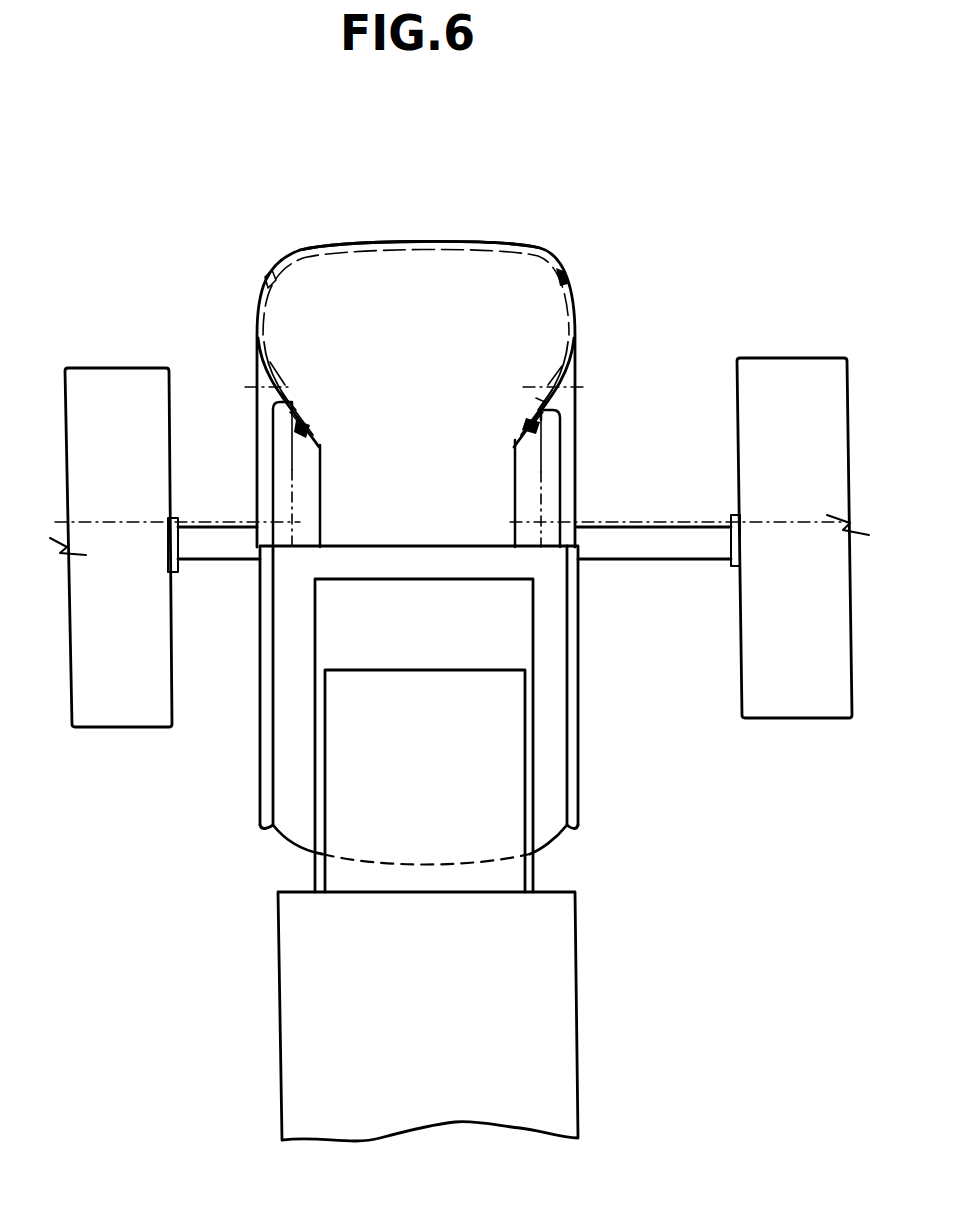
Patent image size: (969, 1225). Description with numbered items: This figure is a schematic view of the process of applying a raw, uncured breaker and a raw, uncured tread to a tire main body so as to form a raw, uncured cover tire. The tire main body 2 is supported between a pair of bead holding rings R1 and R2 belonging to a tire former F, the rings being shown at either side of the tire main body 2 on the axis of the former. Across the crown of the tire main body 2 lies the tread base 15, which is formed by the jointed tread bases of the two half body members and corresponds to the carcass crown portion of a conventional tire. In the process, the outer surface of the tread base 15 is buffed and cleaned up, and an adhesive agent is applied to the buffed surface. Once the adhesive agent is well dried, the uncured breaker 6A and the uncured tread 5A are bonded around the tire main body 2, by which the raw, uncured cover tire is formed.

The tire main body 2 is at (552, 250).
The tread base 15 is at (396, 242).
The bead holding ring R2 is at (290, 462).
The bead holding ring R1 is at (542, 471).
The tire former F is at (776, 340).
The uncured breaker 6A is at (493, 722).
The uncured tread 5A is at (560, 967).